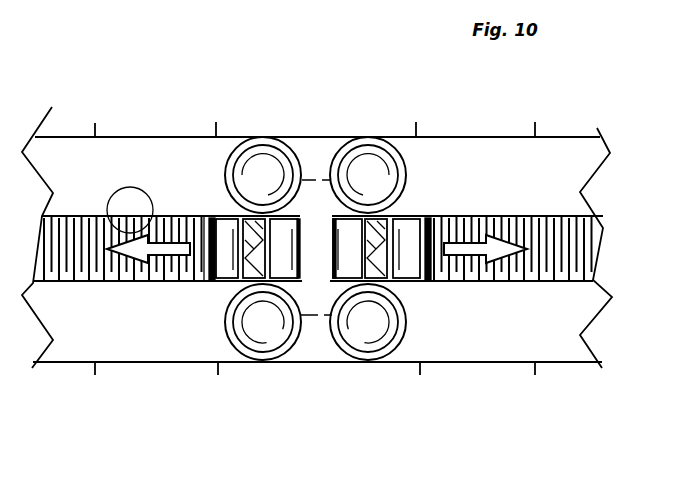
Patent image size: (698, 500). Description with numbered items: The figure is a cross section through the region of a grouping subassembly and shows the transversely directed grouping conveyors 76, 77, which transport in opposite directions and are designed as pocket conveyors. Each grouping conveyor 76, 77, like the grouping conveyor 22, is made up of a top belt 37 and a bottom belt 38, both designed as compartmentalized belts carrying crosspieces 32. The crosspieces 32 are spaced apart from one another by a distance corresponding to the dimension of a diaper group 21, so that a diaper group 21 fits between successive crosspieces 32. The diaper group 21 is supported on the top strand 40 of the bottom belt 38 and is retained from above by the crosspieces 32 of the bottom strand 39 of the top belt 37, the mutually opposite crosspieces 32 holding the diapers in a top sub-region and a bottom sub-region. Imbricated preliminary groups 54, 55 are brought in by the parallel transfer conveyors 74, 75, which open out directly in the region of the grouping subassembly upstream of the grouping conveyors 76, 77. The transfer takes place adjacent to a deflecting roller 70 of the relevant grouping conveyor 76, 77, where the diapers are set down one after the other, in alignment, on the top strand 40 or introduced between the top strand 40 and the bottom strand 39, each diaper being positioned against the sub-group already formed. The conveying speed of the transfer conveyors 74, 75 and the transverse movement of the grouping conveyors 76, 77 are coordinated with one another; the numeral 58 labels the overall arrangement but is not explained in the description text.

The transport device 58 is at (309, 187).
The bottom strand 39 is at (72, 215).
The diaper group 21 is at (132, 205).
The grouping conveyor 76 is at (187, 122).
The crosspieces 32 is at (216, 122).
The top belt 37 is at (250, 127).
The deflecting roller 70 is at (276, 165).
The preliminary group 55 is at (380, 215).
The grouping conveyor 77 is at (448, 128).
The top strand 40 is at (157, 283).
The transfer conveyor 74 is at (222, 288).
The grouping conveyor 22 is at (487, 284).
The preliminary group 54 is at (318, 283).
The transfer conveyor 75 is at (406, 291).
The bottom belt 38 is at (130, 372).